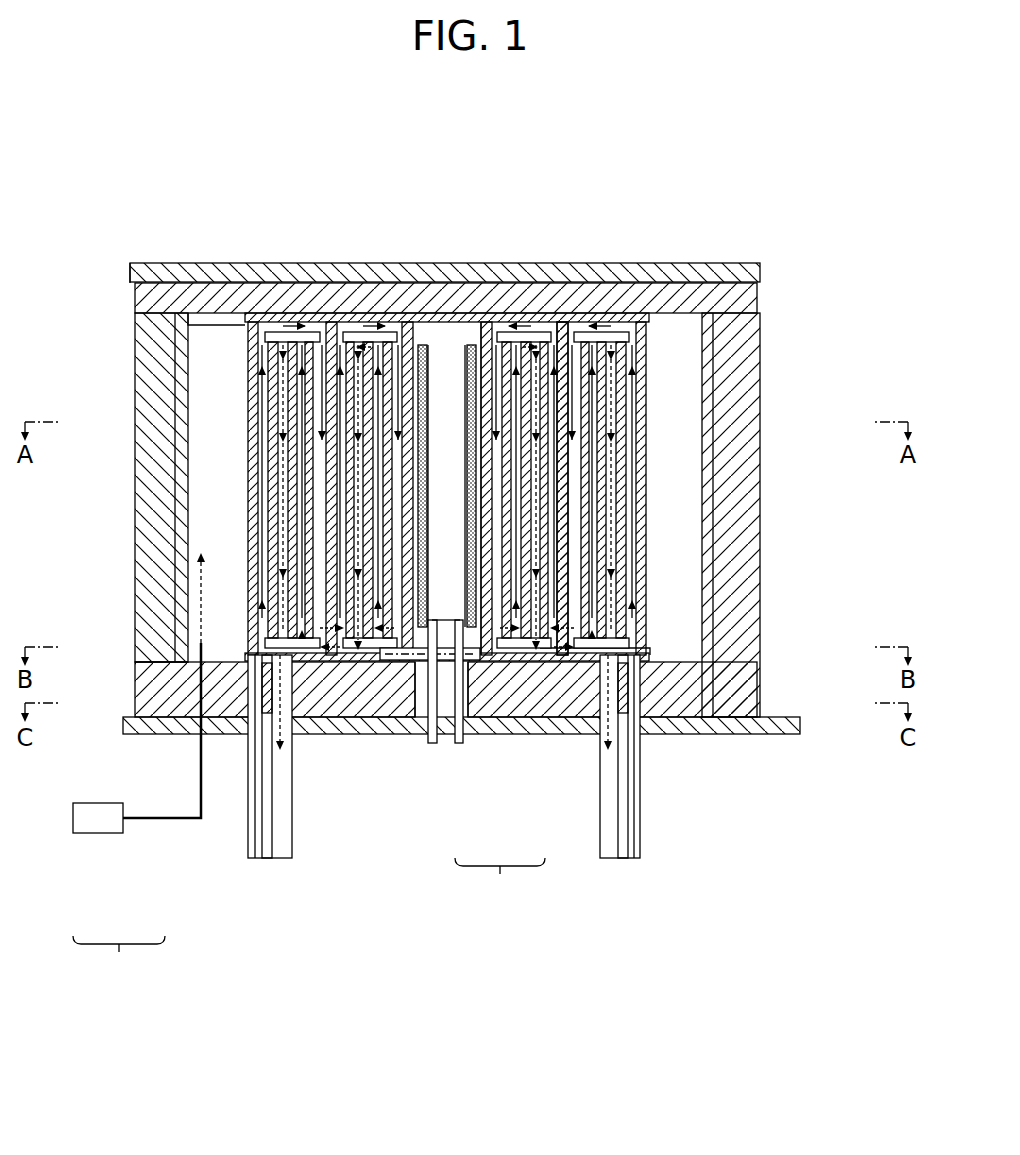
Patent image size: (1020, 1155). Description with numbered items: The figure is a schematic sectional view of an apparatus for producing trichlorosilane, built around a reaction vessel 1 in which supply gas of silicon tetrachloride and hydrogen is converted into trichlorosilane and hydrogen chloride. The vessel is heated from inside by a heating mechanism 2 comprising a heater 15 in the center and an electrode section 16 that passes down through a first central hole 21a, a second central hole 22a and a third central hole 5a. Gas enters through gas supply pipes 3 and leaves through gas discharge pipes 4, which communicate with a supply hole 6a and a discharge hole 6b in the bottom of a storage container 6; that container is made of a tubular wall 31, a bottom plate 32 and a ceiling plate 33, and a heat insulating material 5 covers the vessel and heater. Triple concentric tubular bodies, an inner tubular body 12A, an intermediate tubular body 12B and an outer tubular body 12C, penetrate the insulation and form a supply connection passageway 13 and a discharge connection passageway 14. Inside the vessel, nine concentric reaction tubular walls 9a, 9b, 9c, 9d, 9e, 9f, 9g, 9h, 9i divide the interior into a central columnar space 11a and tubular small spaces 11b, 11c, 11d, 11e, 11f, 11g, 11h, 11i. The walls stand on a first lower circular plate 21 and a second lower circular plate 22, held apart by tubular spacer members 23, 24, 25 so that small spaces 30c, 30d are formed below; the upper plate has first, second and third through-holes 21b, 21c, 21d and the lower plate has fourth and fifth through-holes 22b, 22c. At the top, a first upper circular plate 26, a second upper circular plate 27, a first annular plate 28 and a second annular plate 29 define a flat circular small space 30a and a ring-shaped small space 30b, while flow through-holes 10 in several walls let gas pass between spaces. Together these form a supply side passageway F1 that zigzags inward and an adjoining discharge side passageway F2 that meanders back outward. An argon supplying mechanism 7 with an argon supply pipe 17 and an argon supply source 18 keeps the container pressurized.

The reaction vessel 1 is at (662, 352).
The heating mechanism 2 is at (500, 878).
The gas supply pipe 3 is at (262, 860).
The gas discharge pipe 4 is at (278, 860).
The heat insulating material 5 is at (150, 325).
The third central hole 5a is at (445, 745).
The storage container 6 is at (768, 468).
The supply hole 6a is at (633, 747).
The discharge hole 6b is at (605, 747).
The argon supplying mechanism 7 is at (137, 812).
The first reaction tubular wall 9a is at (487, 600).
The second reaction tubular wall 9b is at (507, 555).
The third reaction tubular wall 9c is at (526, 530).
The fourth reaction tubular wall 9d is at (545, 500).
The fifth reaction tubular wall 9e is at (562, 480).
The sixth reaction tubular wall 9f is at (586, 442).
The seventh reaction tubular wall 9g is at (602, 422).
The eighth reaction tubular wall 9h is at (622, 392).
The ninth reaction tubular wall 9i is at (642, 368).
The flow through-holes 10 is at (530, 330).
The central columnar space 11a is at (422, 350).
The small space 11b is at (260, 356).
The small space 11c is at (276, 380).
The small space 11d is at (294, 402).
The small space 11e is at (310, 425).
The small space 11f is at (332, 450).
The small space 11g is at (350, 475).
The small space 11h is at (368, 505).
The small space 11i is at (388, 535).
The inner tubular body 12A is at (288, 742).
The intermediate tubular body 12B is at (256, 740).
The outer tubular body 12C is at (197, 690).
The supply connection passageway 13 is at (256, 690).
The discharge connection passageway 14 is at (585, 690).
The heater 15 is at (456, 737).
The electrode section 16 is at (466, 700).
The argon supply pipe 17 is at (152, 820).
The argon supply source 18 is at (97, 835).
The first lower circular plate 21 is at (485, 737).
The first central hole 21a is at (437, 722).
The first through-holes 21b is at (560, 650).
The second through-holes 21c is at (600, 645).
The third through-holes 21d is at (540, 624).
The second lower circular plate 22 is at (500, 655).
The second central hole 22a is at (418, 660).
The fourth through-holes 22b is at (622, 660).
The fifth through-holes 22c is at (640, 700).
The first tubular spacer member 23 is at (300, 648).
The second tubular spacer member 24 is at (350, 648).
The third tubular spacer member 25 is at (135, 683).
The first upper circular plate 26 is at (446, 350).
The second upper circular plate 27 is at (408, 338).
The first annular plate 28 is at (487, 345).
The second annular plate 29 is at (563, 345).
The flat circular small space 30a is at (472, 318).
The ring-shaped small space 30b is at (247, 333).
The small space 30c is at (540, 655).
The small space 30d is at (352, 662).
The tubular wall 31 is at (128, 318).
The bottom plate 32 is at (782, 736).
The ceiling plate 33 is at (222, 268).
The supply side passageway F1 is at (372, 326).
The discharge side passageway F2 is at (292, 326).